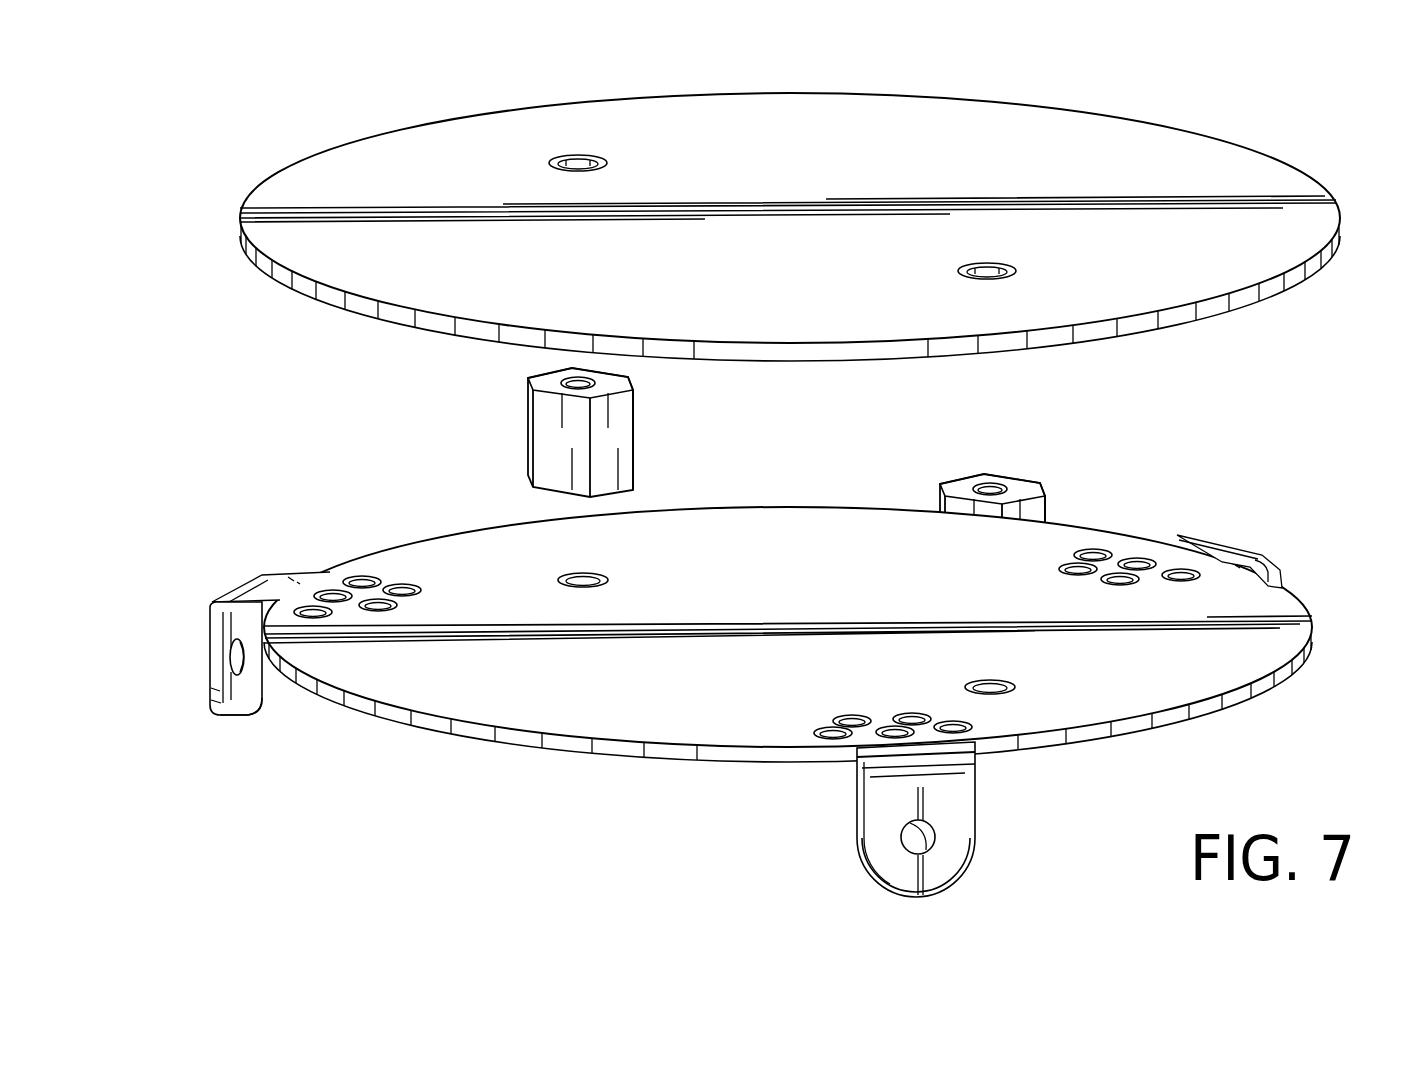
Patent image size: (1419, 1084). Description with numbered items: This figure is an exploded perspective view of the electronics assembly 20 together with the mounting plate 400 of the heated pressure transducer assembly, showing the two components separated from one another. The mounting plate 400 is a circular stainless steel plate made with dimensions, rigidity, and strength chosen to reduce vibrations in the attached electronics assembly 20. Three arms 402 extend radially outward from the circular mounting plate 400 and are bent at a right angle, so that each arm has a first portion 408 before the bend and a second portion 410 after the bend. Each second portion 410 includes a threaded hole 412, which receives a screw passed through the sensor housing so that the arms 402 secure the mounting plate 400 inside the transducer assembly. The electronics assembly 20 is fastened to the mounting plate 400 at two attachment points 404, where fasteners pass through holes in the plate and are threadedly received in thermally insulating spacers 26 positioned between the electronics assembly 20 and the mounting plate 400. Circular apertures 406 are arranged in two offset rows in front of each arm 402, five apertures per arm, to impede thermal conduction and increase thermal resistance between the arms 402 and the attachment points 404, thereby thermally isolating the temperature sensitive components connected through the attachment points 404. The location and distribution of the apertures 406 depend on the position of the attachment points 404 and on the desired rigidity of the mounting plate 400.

The electronics assembly 20 is at (1210, 157).
The thermally insulating spacer 26 is at (580, 155).
The mounting plate 400 is at (462, 775).
The arm 402 is at (195, 650).
The attachment point 404 is at (590, 575).
The aperture 406 is at (400, 585).
The first portion 408 is at (270, 573).
The second portion 410 is at (213, 712).
The threaded hole 412 is at (247, 672).